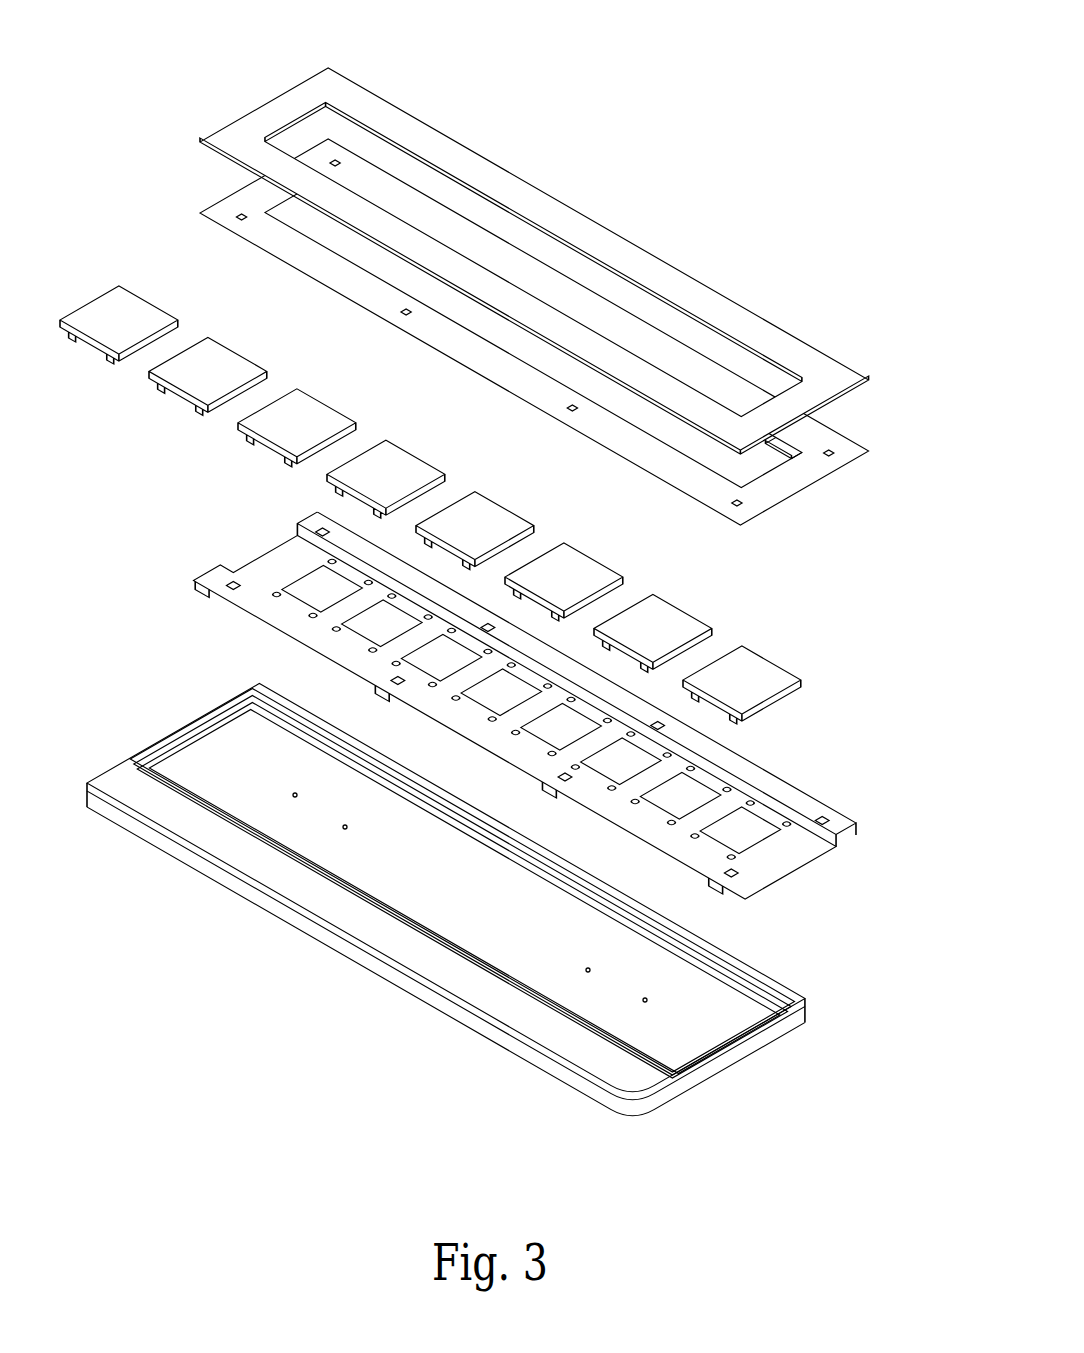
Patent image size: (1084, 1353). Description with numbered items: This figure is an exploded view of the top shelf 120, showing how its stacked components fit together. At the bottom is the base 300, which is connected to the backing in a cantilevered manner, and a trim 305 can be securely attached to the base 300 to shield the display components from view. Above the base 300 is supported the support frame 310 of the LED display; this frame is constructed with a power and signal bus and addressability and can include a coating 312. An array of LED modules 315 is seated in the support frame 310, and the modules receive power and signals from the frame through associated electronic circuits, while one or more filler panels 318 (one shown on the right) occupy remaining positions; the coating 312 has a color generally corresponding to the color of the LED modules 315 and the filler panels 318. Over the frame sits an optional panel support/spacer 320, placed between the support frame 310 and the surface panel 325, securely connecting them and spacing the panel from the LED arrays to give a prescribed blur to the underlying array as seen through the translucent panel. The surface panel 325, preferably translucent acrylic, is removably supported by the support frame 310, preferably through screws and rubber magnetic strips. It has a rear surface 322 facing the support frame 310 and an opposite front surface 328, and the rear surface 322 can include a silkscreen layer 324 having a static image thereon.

The top shelf 120 is at (635, 110).
The base 300 is at (734, 1008).
The trim 305 is at (628, 1120).
The support frame 310 is at (752, 895).
The coating 312 is at (838, 827).
The array of LED modules 315 is at (112, 313).
The filler panel 318 is at (773, 680).
The panel support/spacer 320 is at (743, 507).
The rear surface 322 is at (767, 445).
The silkscreen layer 324 is at (858, 395).
The surface panel 325 is at (687, 253).
The front surface 328 is at (328, 153).